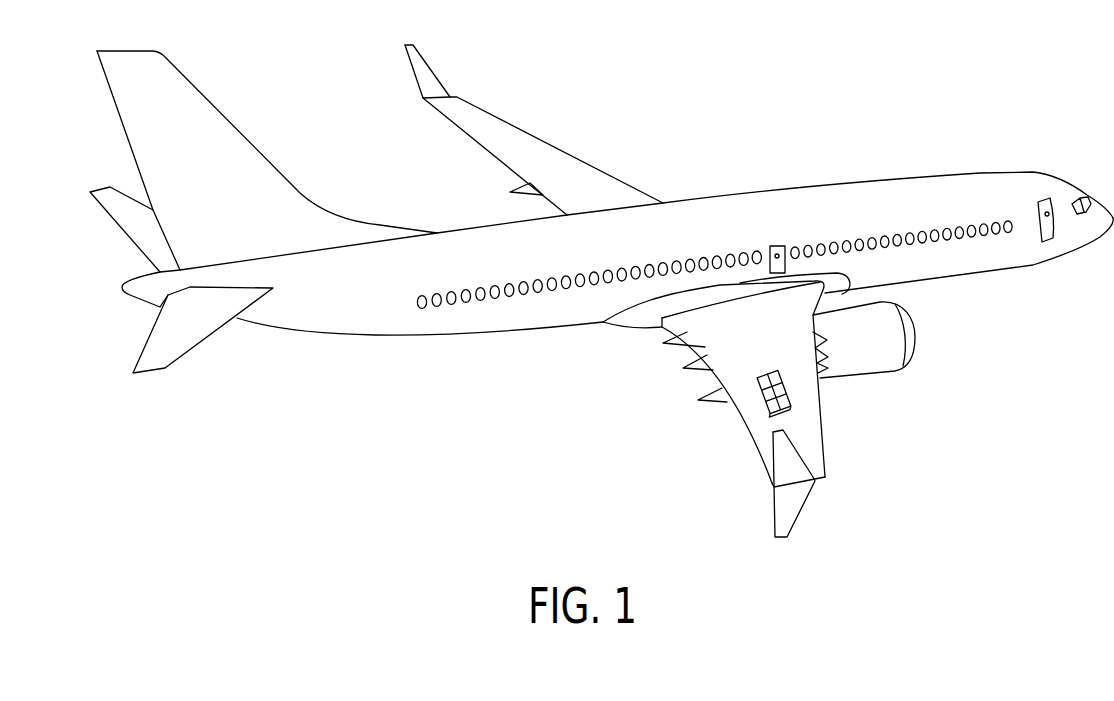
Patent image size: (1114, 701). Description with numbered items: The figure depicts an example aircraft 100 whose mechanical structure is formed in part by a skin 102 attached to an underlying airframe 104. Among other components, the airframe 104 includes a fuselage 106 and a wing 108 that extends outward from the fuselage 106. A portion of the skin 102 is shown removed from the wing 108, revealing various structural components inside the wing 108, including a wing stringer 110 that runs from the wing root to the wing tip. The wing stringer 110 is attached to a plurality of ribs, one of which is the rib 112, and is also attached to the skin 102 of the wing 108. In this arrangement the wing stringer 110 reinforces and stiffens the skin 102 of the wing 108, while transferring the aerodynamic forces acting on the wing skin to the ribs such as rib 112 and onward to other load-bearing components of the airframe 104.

The aircraft 100 is at (601, 290).
The skin 102 is at (374, 323).
The airframe 104 is at (759, 409).
The fuselage 106 is at (820, 176).
The wing 108 is at (738, 421).
The wing stringer 110 is at (803, 420).
The rib 112 is at (790, 405).